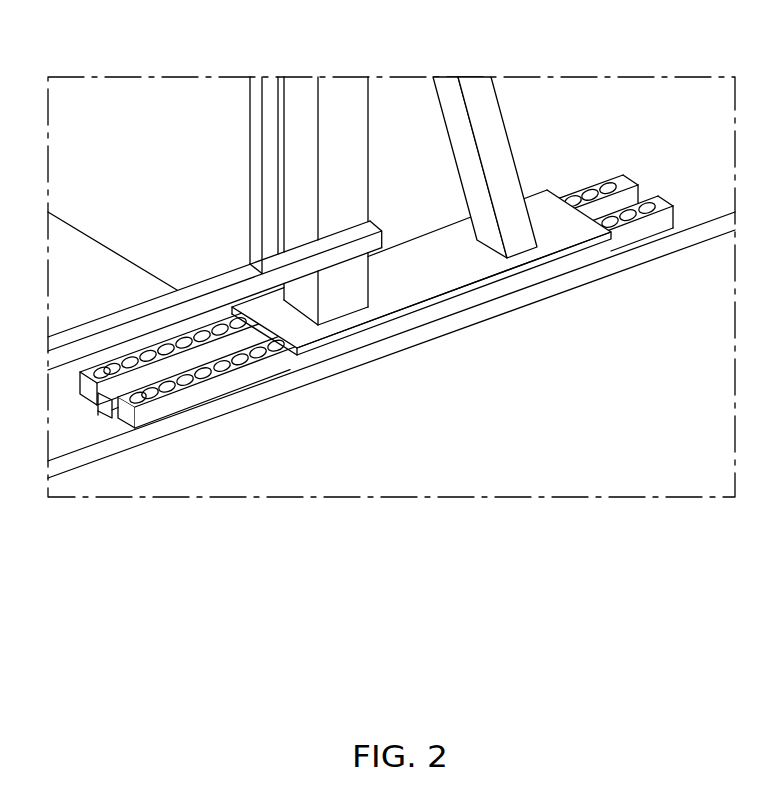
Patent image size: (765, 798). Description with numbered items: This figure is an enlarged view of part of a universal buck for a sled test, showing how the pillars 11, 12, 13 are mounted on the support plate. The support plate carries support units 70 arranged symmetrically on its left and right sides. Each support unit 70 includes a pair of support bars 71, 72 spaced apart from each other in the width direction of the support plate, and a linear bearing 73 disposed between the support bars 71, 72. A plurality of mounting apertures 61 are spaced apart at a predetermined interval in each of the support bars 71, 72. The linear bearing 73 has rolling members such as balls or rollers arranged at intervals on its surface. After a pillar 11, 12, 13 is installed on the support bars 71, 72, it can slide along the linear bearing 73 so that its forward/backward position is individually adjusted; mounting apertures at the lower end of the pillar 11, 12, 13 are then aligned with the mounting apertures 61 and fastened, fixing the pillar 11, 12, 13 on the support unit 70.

The pillar 12 is at (329, 190).
The pillar 11 is at (485, 167).
The pillar 13 is at (346, 106).
The mounting apertures 61 is at (167, 348).
The support unit 70 is at (371, 361).
The support bar 71 is at (153, 419).
The support bar 72 is at (83, 388).
The linear bearing 73 is at (108, 418).